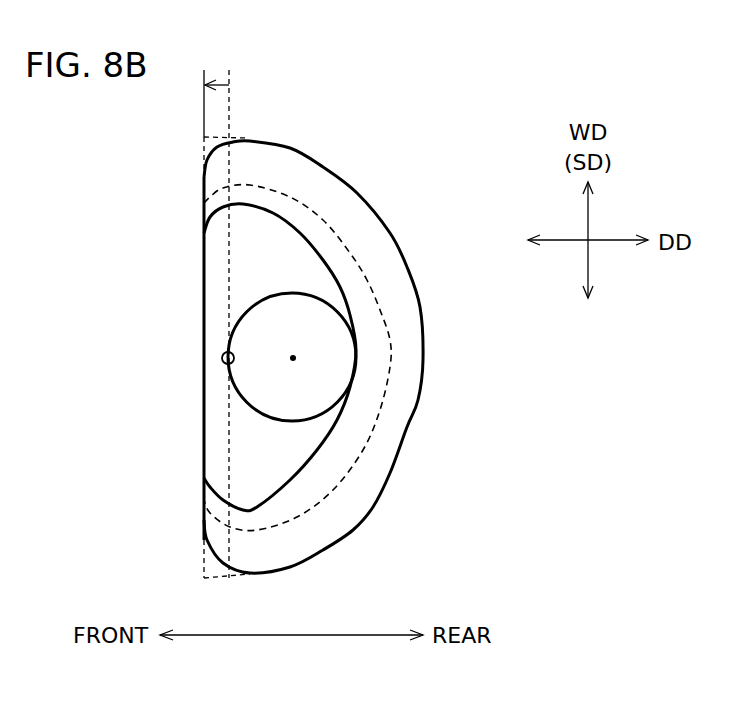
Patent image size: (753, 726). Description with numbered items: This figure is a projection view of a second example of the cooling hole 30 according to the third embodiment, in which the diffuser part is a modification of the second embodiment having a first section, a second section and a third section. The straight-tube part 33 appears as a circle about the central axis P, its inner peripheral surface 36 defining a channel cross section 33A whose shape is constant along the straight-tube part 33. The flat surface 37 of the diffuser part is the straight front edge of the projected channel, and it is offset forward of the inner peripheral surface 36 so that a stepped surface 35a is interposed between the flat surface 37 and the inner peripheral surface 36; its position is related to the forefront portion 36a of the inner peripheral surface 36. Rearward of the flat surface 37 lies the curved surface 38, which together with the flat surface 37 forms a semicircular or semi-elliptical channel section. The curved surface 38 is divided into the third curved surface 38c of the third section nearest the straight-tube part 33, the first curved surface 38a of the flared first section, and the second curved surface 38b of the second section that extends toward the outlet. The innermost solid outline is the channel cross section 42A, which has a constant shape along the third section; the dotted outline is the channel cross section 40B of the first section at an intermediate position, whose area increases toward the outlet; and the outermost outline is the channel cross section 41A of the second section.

The cooling hole 30 is at (367, 152).
The straight-tube part 33 is at (287, 293).
The channel cross section 33A is at (256, 300).
The inner peripheral surface 36 is at (241, 342).
The forefront portion 36a is at (222, 358).
The flat surface 37 is at (203, 413).
The stepped surface 35a is at (247, 450).
The curved surface 38 is at (423, 360).
The first curved surface 38a is at (370, 272).
The second curved surface 38b is at (381, 224).
The third curved surface 38c is at (349, 306).
The channel cross section 42A is at (355, 394).
The channel cross section 40B is at (362, 455).
The channel cross section 41A is at (353, 527).